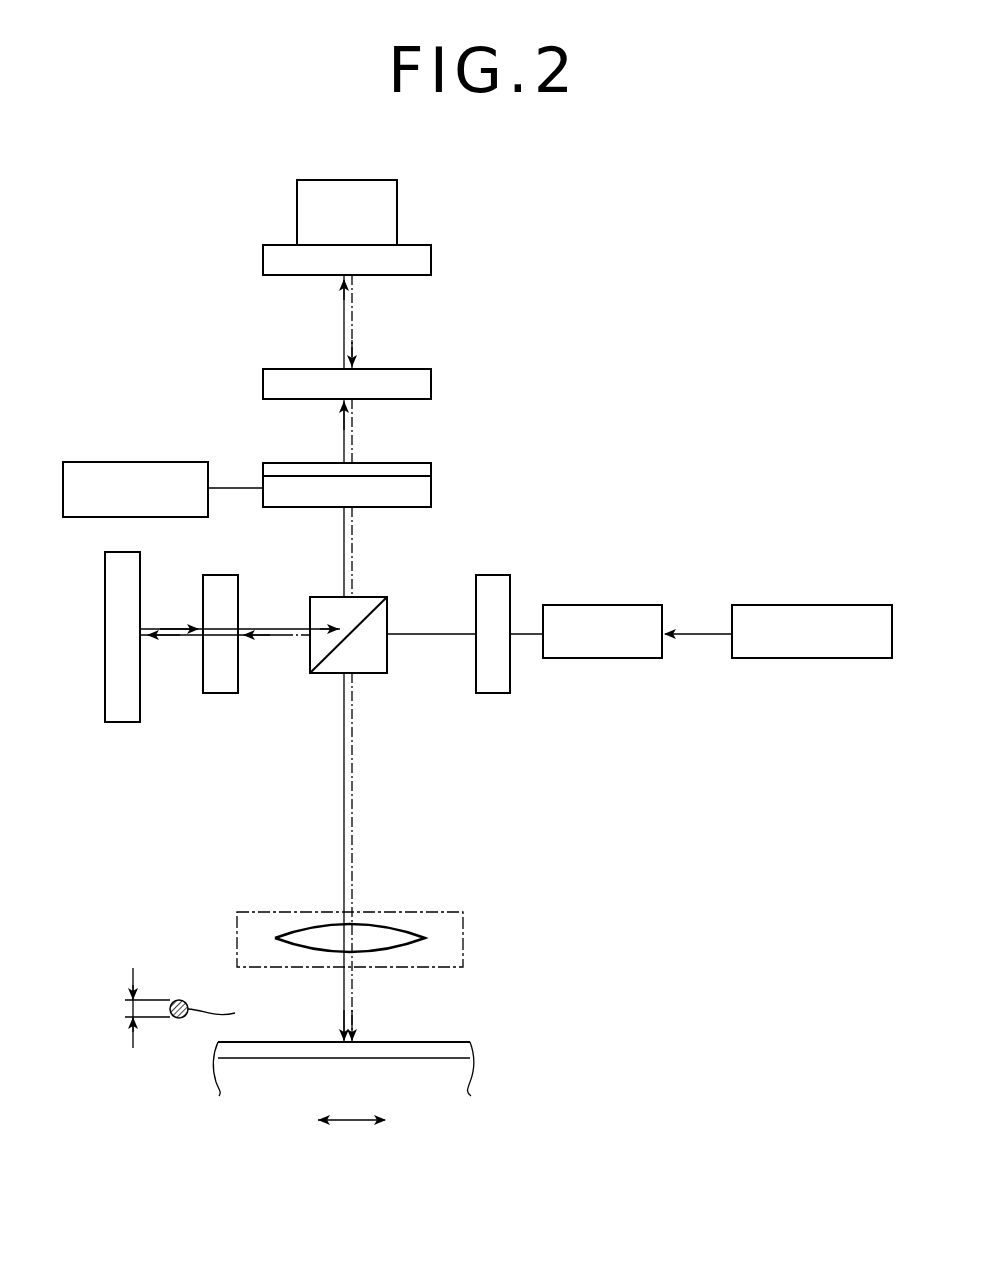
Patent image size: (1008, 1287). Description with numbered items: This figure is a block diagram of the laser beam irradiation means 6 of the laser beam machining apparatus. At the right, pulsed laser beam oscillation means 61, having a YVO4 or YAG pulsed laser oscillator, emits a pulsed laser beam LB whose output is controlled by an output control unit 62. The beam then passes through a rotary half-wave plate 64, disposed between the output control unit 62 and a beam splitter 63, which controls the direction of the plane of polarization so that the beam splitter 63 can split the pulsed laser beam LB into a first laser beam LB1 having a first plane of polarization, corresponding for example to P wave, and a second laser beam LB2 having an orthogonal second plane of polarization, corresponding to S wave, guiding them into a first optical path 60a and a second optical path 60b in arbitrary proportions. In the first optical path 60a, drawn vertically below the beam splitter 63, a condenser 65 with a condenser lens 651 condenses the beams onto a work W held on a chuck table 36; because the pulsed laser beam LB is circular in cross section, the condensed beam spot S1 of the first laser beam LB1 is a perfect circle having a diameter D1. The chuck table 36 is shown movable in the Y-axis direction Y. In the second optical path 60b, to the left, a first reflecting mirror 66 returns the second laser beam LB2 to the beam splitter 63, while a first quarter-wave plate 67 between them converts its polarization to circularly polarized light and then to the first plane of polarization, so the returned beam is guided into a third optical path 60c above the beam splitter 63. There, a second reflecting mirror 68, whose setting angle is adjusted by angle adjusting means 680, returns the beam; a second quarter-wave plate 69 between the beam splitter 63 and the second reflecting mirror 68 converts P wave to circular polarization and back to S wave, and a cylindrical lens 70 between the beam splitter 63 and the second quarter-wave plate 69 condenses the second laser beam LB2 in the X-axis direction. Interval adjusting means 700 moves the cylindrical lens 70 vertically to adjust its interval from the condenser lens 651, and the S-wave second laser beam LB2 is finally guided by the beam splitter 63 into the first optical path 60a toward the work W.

The laser beam irradiation means 6 is at (562, 347).
The pulsed laser beam oscillation means 61 is at (797, 658).
The output control unit 62 is at (585, 658).
The beam splitter 63 is at (372, 597).
The rotary half-wave plate 64 is at (490, 693).
The condenser 65 is at (468, 932).
The condenser lens 651 is at (272, 937).
The first reflecting mirror 66 is at (118, 722).
The first quarter-wave plate 67 is at (215, 693).
The second reflecting mirror 68 is at (431, 260).
The angle adjusting means 680 is at (397, 212).
The second quarter-wave plate 69 is at (431, 385).
The cylindrical lens 70 is at (431, 473).
The interval adjusting means 700 is at (146, 460).
The first optical path 60a is at (338, 810).
The second optical path 60b is at (278, 604).
The third optical path 60c is at (360, 440).
The pulsed laser beam LB is at (697, 632).
The first laser beam LB1 is at (353, 762).
The second laser beam LB2 is at (276, 640).
The work W is at (450, 1042).
The chuck table 36 is at (462, 1077).
The condensed beam spot S1 is at (338, 1040).
The diameter D1 is at (160, 1008).
The Y-axis direction Y is at (351, 1137).